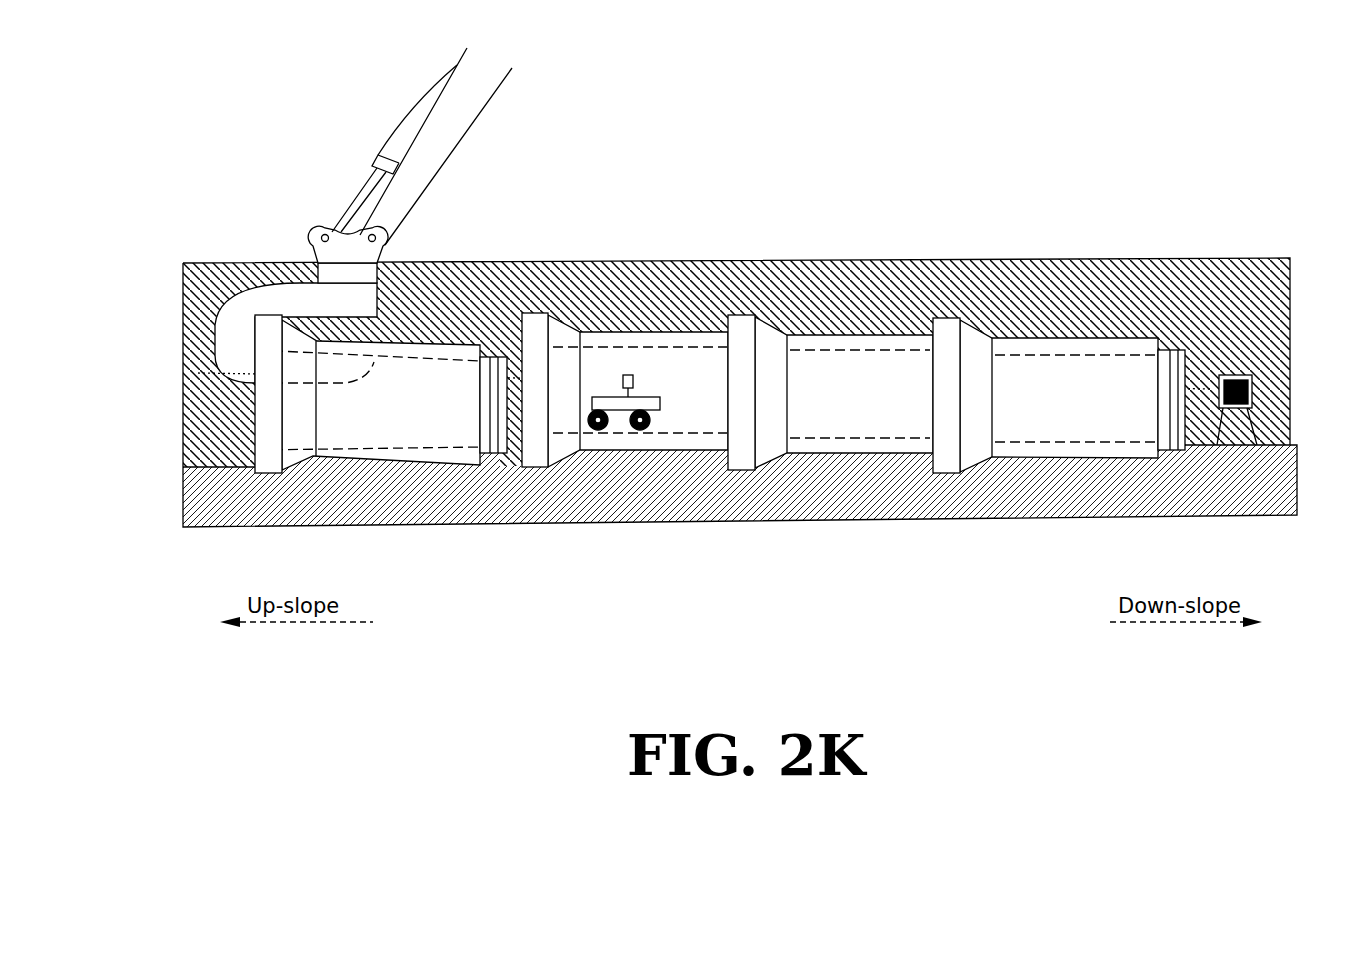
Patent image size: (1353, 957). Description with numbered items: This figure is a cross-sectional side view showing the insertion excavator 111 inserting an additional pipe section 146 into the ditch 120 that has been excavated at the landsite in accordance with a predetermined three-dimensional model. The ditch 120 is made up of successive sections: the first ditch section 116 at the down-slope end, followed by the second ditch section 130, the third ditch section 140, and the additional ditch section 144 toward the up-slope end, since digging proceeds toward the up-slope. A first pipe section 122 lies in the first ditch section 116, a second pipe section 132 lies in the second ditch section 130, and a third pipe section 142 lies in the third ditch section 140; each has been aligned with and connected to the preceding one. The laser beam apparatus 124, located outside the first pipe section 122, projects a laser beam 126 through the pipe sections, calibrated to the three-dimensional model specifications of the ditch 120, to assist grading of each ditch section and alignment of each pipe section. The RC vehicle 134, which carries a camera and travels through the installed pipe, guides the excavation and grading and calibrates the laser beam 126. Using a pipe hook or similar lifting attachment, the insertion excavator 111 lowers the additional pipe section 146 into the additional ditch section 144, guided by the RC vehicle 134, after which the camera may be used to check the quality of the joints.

The insertion excavator 111 is at (417, 110).
The first ditch section 116 is at (1047, 262).
The ditch 120 is at (626, 309).
The first pipe section 122 is at (1010, 458).
The laser beam apparatus 124 is at (1233, 376).
The laser beam 126 is at (683, 382).
The second ditch section 130 is at (818, 260).
The second pipe section 132 is at (806, 457).
The RC vehicle 134 is at (622, 420).
The third ditch section 140 is at (608, 260).
The third pipe section 142 is at (600, 452).
The additional ditch section 144 is at (440, 262).
The additional pipe section 146 is at (353, 470).